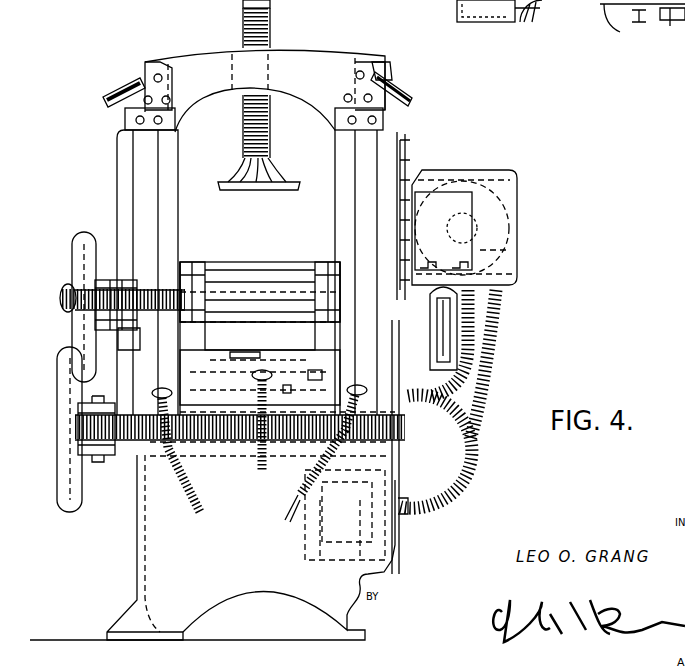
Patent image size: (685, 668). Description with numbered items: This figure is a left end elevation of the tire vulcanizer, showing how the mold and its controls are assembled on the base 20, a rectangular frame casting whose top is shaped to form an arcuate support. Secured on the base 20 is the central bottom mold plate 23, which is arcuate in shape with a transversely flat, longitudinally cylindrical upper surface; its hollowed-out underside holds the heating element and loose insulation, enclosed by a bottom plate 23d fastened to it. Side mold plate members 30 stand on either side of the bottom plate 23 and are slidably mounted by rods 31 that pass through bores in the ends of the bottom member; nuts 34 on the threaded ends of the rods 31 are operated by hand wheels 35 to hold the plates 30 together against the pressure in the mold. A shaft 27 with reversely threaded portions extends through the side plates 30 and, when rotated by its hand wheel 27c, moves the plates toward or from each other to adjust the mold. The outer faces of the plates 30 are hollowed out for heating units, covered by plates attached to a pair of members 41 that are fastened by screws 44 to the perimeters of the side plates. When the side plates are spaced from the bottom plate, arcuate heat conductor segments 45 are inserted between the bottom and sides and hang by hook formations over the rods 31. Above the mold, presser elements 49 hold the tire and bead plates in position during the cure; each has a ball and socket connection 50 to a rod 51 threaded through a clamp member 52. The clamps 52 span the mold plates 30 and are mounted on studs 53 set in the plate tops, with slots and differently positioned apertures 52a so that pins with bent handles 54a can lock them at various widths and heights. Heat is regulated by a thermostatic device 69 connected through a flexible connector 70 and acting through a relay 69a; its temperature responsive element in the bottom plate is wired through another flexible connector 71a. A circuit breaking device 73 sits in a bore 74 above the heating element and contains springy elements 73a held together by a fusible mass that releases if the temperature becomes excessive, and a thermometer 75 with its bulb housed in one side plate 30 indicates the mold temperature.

The base 20 is at (140, 566).
The bottom mold plate 23 is at (273, 262).
The bottom plate 23d is at (245, 350).
The shaft 27 is at (133, 463).
The hand wheel 27c is at (57, 410).
The side mold plate members 30 is at (148, 177).
The rods 31 is at (69, 288).
The nuts 34 is at (111, 280).
The hand wheels 35 is at (81, 234).
The members 41 is at (120, 152).
The screws 44 is at (126, 119).
The heat conductor segments 45 is at (197, 262).
The presser elements 49 is at (298, 183).
The ball and socket connection 50 is at (276, 170).
The rods 51 is at (272, 40).
The clamp members 52 is at (300, 52).
The slots and apertures 52a is at (375, 100).
The studs 53 is at (150, 62).
The handles 54a is at (126, 92).
The thermostatic device 69 is at (513, 213).
The relay 69a is at (326, 523).
The flexible connector 70 is at (487, 405).
The flexible connector 71a is at (471, 318).
The circuit breaking device 73 is at (476, 483).
The springy elements 73a is at (288, 384).
The bore 74 is at (287, 421).
The thermometer 75 is at (461, 346).